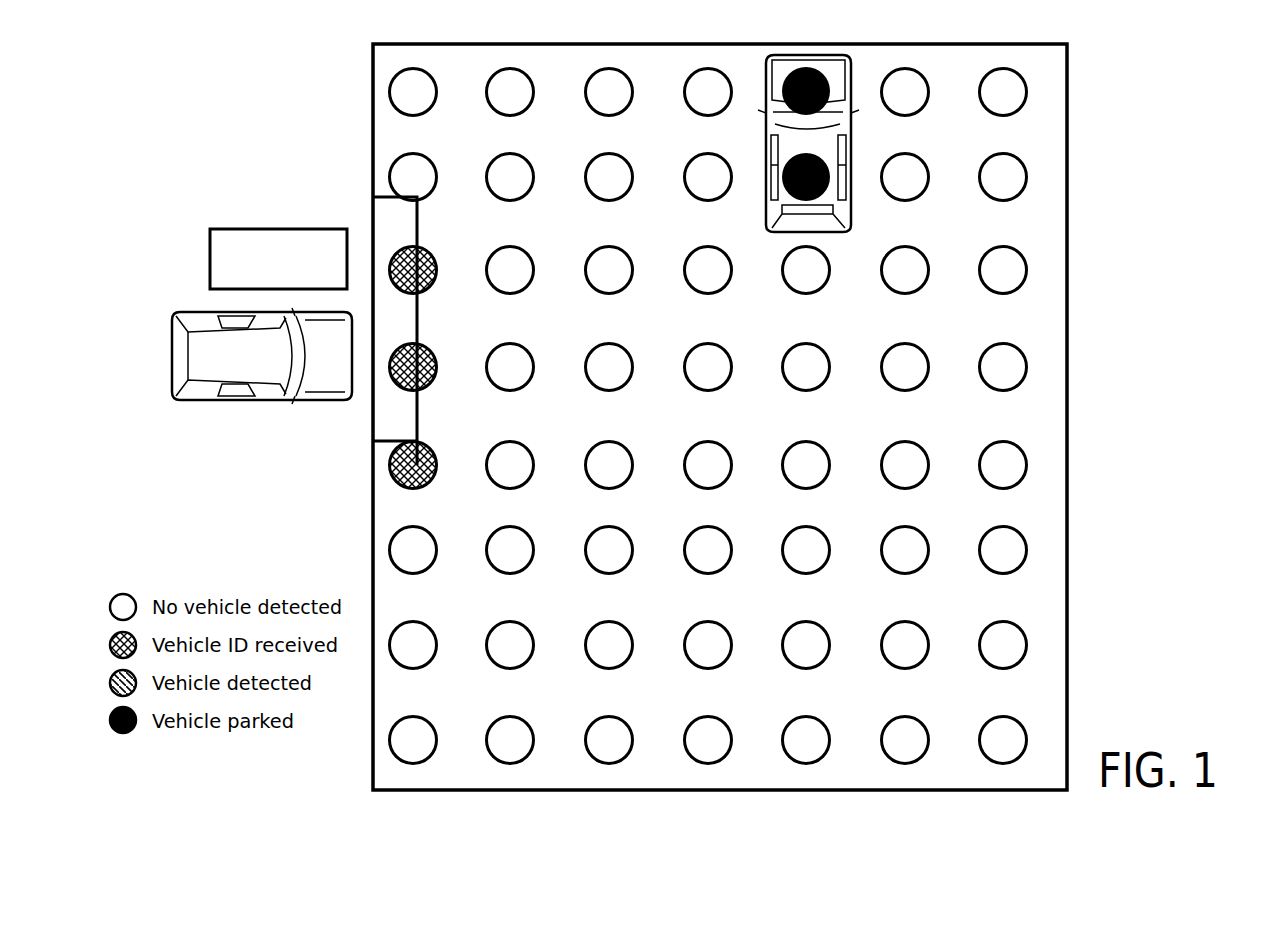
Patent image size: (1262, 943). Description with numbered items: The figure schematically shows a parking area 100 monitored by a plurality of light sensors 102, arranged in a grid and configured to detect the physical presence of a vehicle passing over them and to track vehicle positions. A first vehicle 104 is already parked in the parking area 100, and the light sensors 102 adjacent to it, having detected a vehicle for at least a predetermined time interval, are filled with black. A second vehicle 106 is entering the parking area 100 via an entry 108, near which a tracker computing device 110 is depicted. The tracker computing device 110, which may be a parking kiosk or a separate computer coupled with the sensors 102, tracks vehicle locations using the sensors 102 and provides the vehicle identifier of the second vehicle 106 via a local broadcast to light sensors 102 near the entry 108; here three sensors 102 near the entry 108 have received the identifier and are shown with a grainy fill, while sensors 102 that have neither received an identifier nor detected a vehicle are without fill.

The parking area 100 is at (373, 85).
The light sensors 102 is at (487, 91).
The first vehicle 104 is at (765, 212).
The second vehicle 106 is at (203, 400).
The entry 108 is at (418, 232).
The tracker computing device 110 is at (262, 269).